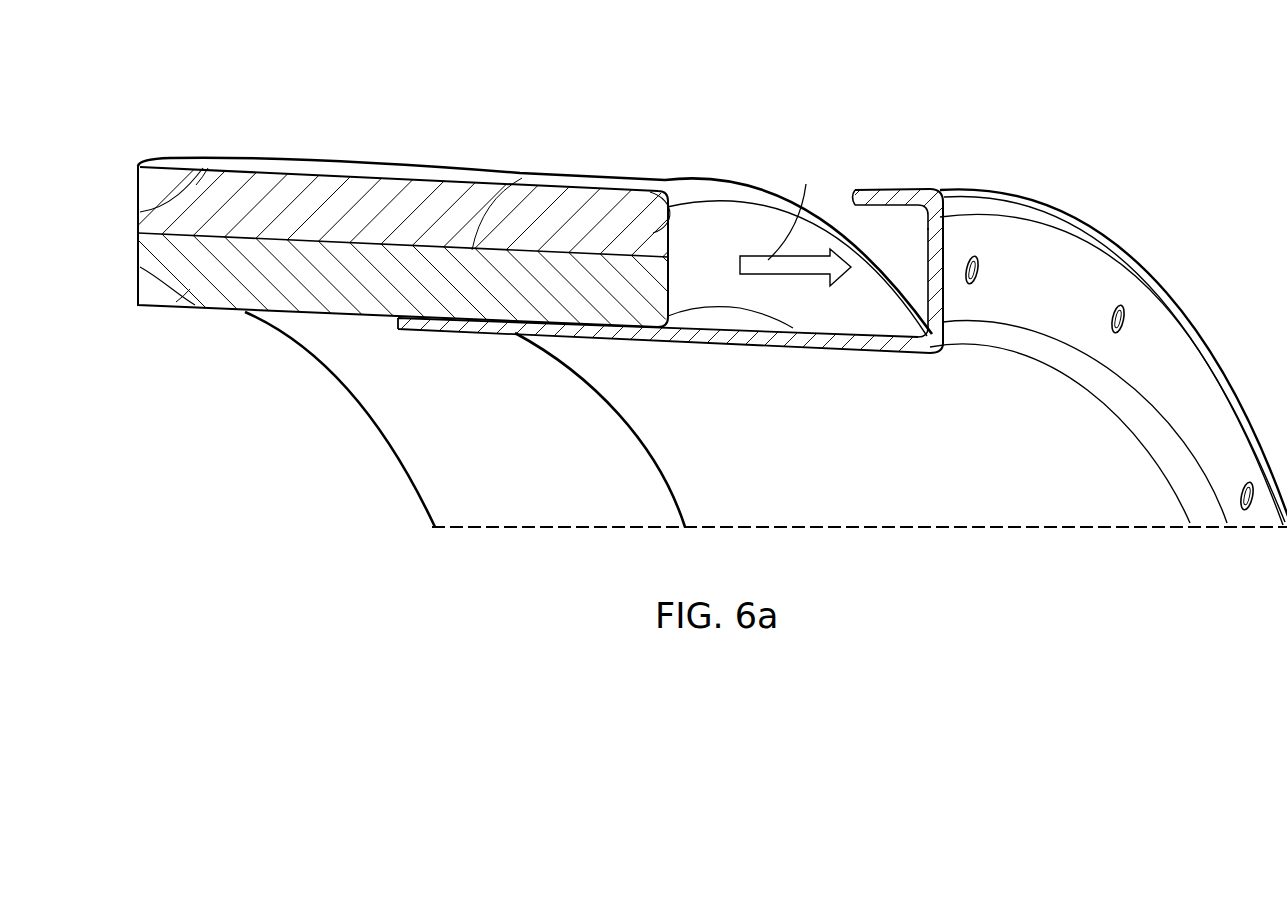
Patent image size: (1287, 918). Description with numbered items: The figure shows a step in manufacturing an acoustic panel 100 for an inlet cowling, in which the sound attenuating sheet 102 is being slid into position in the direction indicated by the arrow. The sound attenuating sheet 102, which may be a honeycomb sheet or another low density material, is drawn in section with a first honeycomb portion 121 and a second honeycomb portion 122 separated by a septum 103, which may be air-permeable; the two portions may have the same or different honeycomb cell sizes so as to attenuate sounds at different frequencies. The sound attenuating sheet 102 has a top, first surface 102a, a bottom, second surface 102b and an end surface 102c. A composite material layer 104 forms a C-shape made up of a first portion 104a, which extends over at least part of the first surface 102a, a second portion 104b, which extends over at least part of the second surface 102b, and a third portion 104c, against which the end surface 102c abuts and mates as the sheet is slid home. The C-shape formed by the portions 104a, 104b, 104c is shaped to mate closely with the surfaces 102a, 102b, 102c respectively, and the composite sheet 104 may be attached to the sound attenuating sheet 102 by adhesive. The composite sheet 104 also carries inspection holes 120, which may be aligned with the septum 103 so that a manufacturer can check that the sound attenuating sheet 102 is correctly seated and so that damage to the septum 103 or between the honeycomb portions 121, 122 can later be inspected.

The acoustic panel 100 is at (198, 119).
The sound attenuating sheet 102 is at (406, 122).
The first surface 102a is at (140, 212).
The second surface 102b is at (140, 266).
The end surface 102c is at (643, 212).
The septum 103 is at (472, 250).
The composite material layer 104 is at (804, 458).
The first portion 104a is at (893, 203).
The second portion 104b is at (813, 350).
The third portion 104c is at (943, 307).
The inspection holes 120 is at (977, 257).
The first honeycomb portion 121 is at (428, 231).
The second honeycomb portion 122 is at (428, 299).